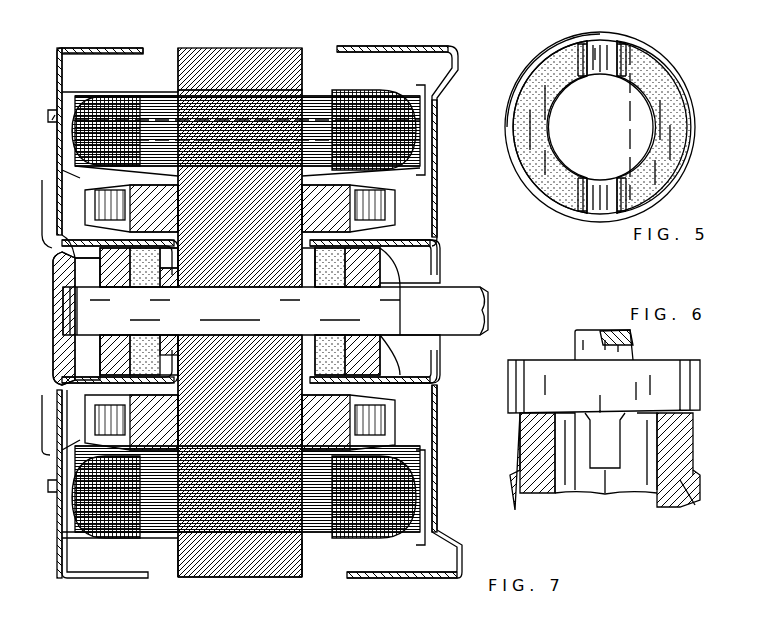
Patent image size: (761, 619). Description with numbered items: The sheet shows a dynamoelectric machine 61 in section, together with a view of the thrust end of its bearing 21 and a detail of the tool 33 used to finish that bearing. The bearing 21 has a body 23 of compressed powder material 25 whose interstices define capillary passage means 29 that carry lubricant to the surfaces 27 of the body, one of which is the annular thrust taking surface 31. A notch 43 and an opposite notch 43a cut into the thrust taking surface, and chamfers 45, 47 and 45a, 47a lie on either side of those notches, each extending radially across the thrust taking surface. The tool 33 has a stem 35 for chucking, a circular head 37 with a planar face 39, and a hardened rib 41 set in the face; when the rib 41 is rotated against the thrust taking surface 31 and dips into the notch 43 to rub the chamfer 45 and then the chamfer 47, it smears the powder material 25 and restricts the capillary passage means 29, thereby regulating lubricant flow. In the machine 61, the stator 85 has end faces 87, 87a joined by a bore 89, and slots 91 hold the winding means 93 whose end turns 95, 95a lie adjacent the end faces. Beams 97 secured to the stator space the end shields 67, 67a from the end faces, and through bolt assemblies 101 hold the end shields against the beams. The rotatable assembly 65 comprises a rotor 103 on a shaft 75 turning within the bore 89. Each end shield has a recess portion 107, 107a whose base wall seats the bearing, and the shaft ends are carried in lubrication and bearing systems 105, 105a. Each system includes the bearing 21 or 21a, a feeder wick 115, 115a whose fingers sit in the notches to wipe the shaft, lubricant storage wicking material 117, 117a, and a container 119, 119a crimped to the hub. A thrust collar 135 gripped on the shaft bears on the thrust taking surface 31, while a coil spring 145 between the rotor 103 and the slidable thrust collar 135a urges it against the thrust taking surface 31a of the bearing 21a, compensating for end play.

In FIG. 7, the bearing 21 is at (87, 341).
In FIG. 5, the bearing 21 is at (526, 190).
In FIG. 6, the bearing 21 is at (642, 512).
In FIG. 7, the bearing 21a is at (402, 336).
In FIG. 5, the bearing body 23 is at (667, 76).
In FIG. 6, the bearing body 23 is at (520, 427).
In FIG. 5, the compressed powder material 25 is at (680, 135).
In FIG. 6, the compressed powder material 25 is at (525, 447).
In FIG. 7, the surfaces 27 is at (298, 2).
In FIG. 5, the surfaces 27 is at (672, 167).
In FIG. 6, the surfaces 27 is at (697, 472).
In FIG. 5, the capillary passage means 29 is at (660, 192).
In FIG. 6, the capillary passage means 29 is at (682, 500).
In FIG. 5, the thrust taking surface 31 is at (652, 62).
In FIG. 6, the thrust taking surface 31 is at (552, 414).
In FIG. 7, the thrust taking surface 31a is at (372, 289).
In FIG. 6, the tool 33 is at (565, 340).
In FIG. 6, the stem 35 is at (615, 330).
In FIG. 6, the head 37 is at (670, 360).
In FIG. 6, the face 39 is at (670, 396).
In FIG. 6, the rib 41 is at (605, 420).
In FIG. 5, the notch 43 is at (600, 40).
In FIG. 6, the notch 43 is at (605, 493).
In FIG. 5, the notch 43a is at (602, 218).
In FIG. 5, the chamfer 45 is at (572, 50).
In FIG. 6, the chamfer 45 is at (580, 420).
In FIG. 5, the chamfer 45a is at (570, 206).
In FIG. 5, the chamfer 47 is at (634, 50).
In FIG. 6, the chamfer 47 is at (632, 420).
In FIG. 5, the chamfer 47a is at (635, 212).
In FIG. 7, the dynamoelectric machine 61 is at (50, 48).
In FIG. 7, the rotatable assembly 65 is at (250, 314).
In FIG. 7, the end shield 67 is at (103, 46).
In FIG. 7, the end shield 67a is at (412, 46).
In FIG. 7, the shaft 75 is at (488, 299).
In FIG. 7, the stator 85 is at (252, 565).
In FIG. 7, the end face 87 is at (178, 560).
In FIG. 7, the end face 87a is at (304, 552).
In FIG. 7, the bore 89 is at (215, 445).
In FIG. 7, the slots 91 is at (237, 86).
In FIG. 7, the winding means 93 is at (247, 131).
In FIG. 7, the end turns 95 is at (113, 97).
In FIG. 7, the end turns 95a is at (368, 90).
In FIG. 7, the beams 97 is at (92, 72).
In FIG. 7, the through bolt assemblies 101 is at (50, 114).
In FIG. 7, the rotor 103 is at (257, 413).
In FIG. 7, the lubrication and bearing system 105 is at (48, 276).
In FIG. 7, the lubrication and bearing system 105a is at (525, 271).
In FIG. 7, the recess portion 107 is at (70, 392).
In FIG. 7, the recess portion 107a is at (422, 382).
In FIG. 7, the feeder wick 115 is at (160, 236).
In FIG. 7, the feeder wick 115a is at (372, 234).
In FIG. 7, the lubricant storage wicking material 117 is at (176, 240).
In FIG. 7, the lubricant storage wicking material 117a is at (312, 232).
In FIG. 7, the container 119 is at (176, 262).
In FIG. 7, the container 119a is at (312, 254).
In FIG. 7, the thrust collar 135 is at (150, 289).
In FIG. 7, the thrust collar 135a is at (338, 289).
In FIG. 7, the coil spring 145 is at (300, 356).